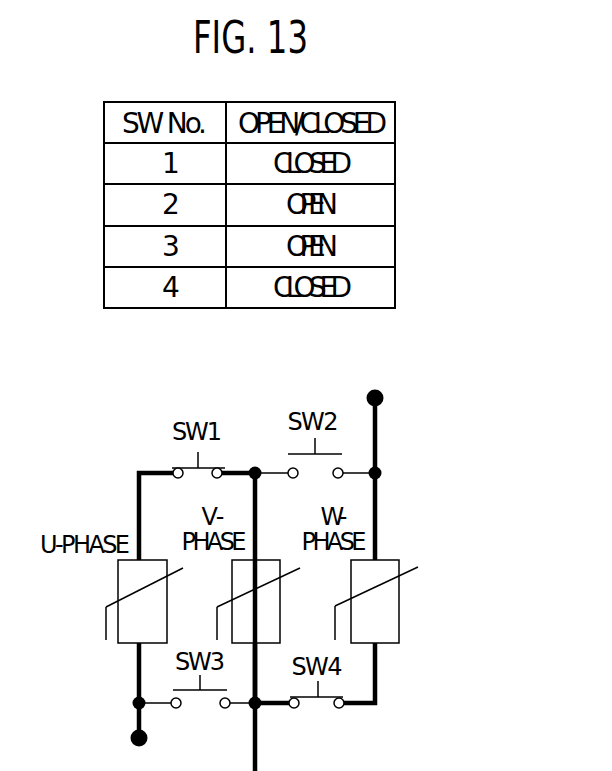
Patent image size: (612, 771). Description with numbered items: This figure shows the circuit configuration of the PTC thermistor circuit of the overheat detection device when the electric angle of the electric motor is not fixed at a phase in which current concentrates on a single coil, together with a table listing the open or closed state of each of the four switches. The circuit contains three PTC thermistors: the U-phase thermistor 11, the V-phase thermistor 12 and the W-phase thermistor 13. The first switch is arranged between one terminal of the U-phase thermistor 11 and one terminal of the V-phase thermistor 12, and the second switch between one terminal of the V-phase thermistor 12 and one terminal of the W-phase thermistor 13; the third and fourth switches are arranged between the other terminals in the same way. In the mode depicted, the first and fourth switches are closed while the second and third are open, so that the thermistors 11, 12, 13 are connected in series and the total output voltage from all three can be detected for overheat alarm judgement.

The U-phase thermistor 11 is at (117, 578).
The V-phase thermistor 12 is at (283, 624).
The W-phase thermistor 13 is at (399, 609).